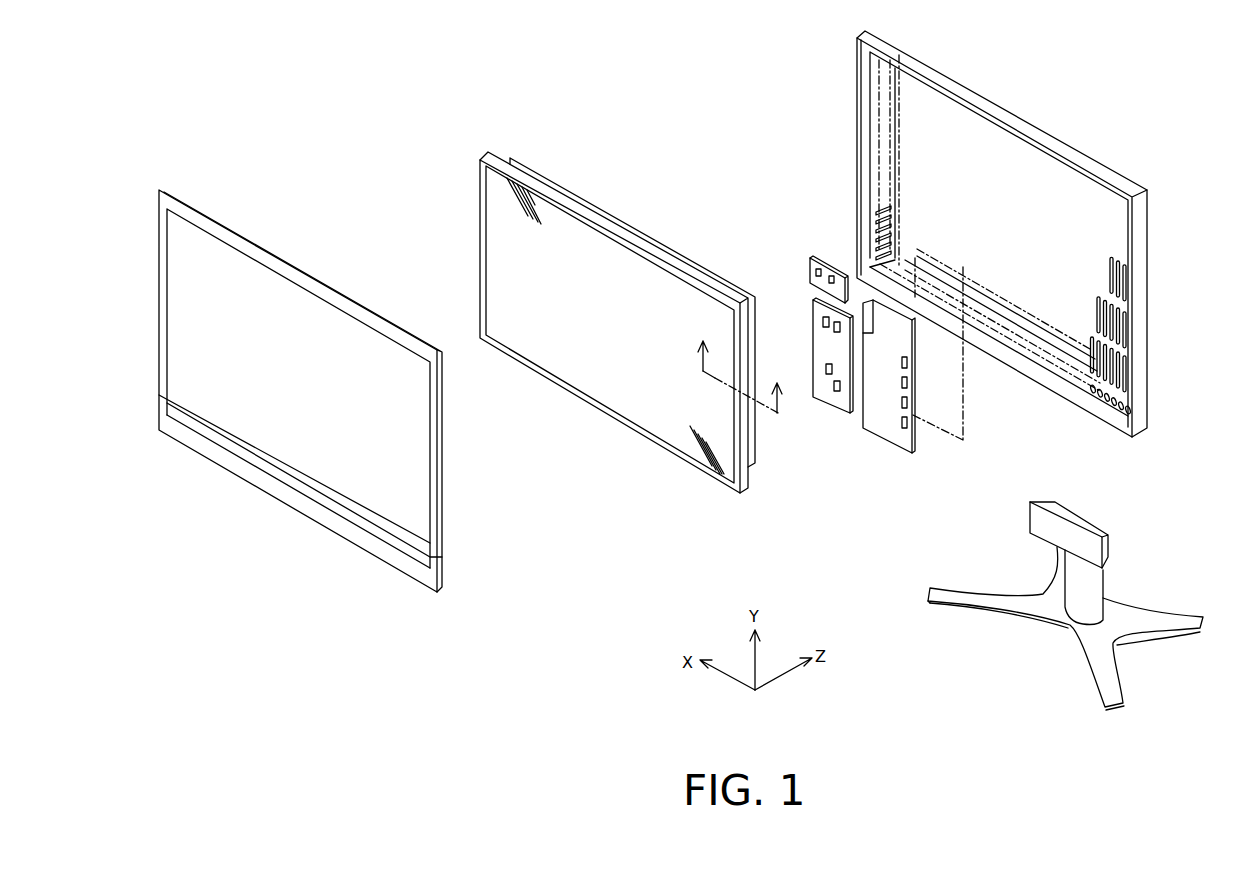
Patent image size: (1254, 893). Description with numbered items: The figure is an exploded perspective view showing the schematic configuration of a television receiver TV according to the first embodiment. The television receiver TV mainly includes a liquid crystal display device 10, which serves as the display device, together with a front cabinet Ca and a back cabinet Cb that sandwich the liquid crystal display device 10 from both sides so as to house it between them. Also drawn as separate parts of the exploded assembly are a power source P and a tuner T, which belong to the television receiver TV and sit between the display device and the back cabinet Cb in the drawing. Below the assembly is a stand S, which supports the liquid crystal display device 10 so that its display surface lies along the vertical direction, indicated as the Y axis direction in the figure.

The television receiver TV is at (637, 100).
The front cabinet Ca is at (285, 261).
The liquid crystal display device 10 is at (570, 197).
The tuner T is at (826, 405).
The power source P is at (882, 437).
The back cabinet Cb is at (993, 103).
The stand S is at (990, 614).